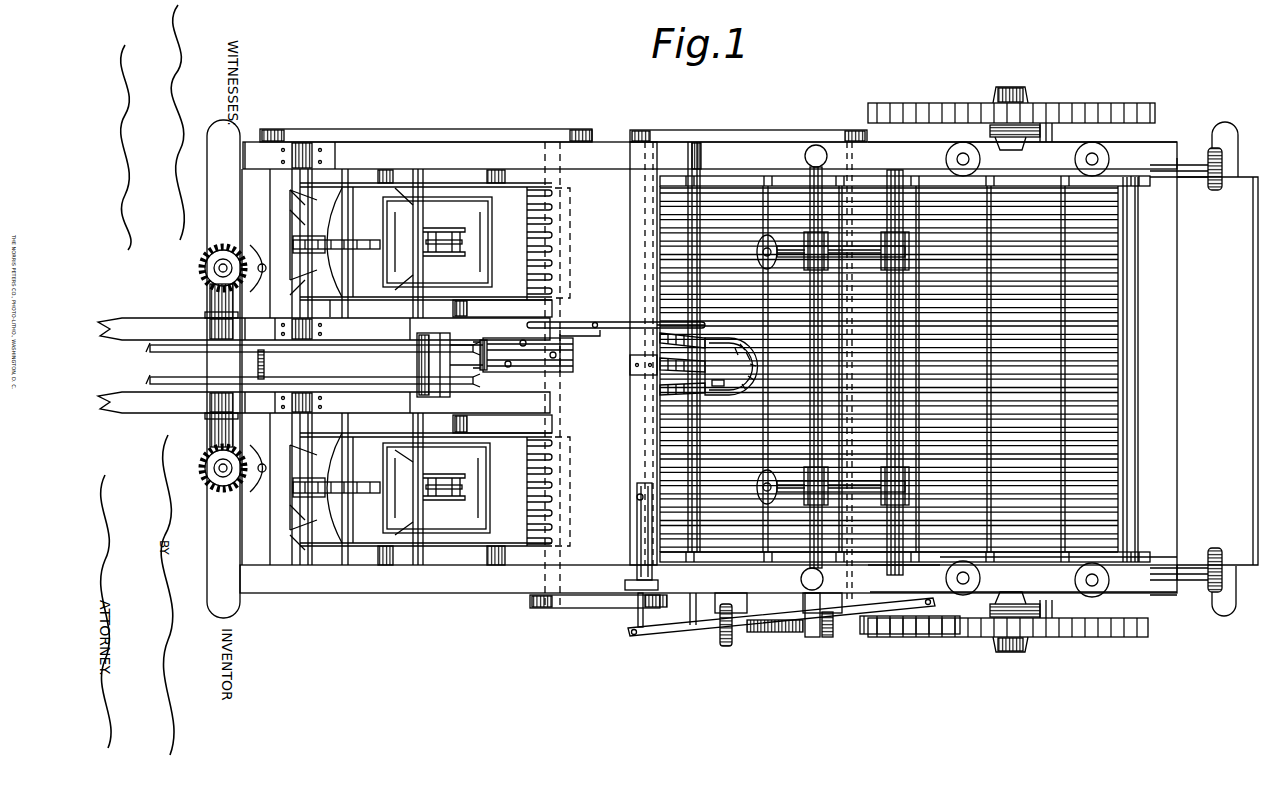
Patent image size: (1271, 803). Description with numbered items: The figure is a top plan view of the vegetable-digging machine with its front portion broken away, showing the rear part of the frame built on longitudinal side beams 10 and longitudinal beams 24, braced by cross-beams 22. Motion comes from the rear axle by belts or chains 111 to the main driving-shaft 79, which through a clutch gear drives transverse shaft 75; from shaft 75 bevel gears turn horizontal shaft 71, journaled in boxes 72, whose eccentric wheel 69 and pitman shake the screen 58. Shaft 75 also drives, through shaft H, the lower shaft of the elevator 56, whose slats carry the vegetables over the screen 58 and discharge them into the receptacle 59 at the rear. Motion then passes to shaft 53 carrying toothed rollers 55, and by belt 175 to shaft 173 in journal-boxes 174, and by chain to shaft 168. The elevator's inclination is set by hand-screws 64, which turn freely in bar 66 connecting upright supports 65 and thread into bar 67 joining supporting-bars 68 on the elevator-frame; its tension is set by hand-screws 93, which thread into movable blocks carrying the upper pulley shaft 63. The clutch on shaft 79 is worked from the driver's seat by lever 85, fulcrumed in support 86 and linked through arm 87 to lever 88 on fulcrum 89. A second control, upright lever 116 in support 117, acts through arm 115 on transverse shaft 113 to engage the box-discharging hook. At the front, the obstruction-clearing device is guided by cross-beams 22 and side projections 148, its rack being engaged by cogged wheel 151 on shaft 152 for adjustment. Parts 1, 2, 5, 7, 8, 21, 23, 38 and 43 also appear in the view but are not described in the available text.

The cylinder 1 is at (522, 342).
The frame box 2 is at (424, 462).
The bolt 5 is at (445, 496).
The cross bar 7 is at (443, 476).
The rod 8 is at (412, 516).
The side beams 10 is at (708, 375).
The post 21 is at (641, 353).
The cross-beams 22 is at (292, 367).
The gear wheel 23 is at (234, 369).
The longitudinal beams 24 is at (164, 413).
The plate 38 is at (421, 365).
The casing 43 is at (709, 364).
The shaft 53 is at (545, 158).
The toothed rollers 55 is at (568, 548).
The elevator 56 is at (765, 408).
The shaking screen 58 is at (746, 424).
The receptacle 59 is at (1217, 371).
The shaft 63 is at (645, 238).
The hand-screws 64 is at (790, 245).
The upright supports 65 is at (815, 145).
The bar 66 is at (810, 371).
The bar 67 is at (905, 353).
The supporting-bars 68 is at (915, 577).
The eccentric wheel 69 is at (715, 675).
The horizontal shaft 71 is at (770, 666).
The boxes 72 is at (745, 630).
The transverse shaft 75 is at (855, 150).
The shaft 79 is at (903, 158).
The lever 85 is at (637, 500).
The support 86 is at (637, 538).
The arm 87 is at (636, 618).
The lever 88 is at (690, 628).
The fulcrum 89 is at (885, 634).
The hand-screws 93 is at (1190, 600).
The belt or chain 111 is at (972, 130).
The transverse shaft 113 is at (725, 648).
The arm 115 is at (665, 312).
The upright lever 116 is at (596, 330).
The support 117 is at (602, 336).
The side projections 148 is at (330, 452).
The cogged wheel 151 is at (350, 482).
The shaft 152 is at (342, 512).
The shaft 168 is at (1009, 369).
The shaft 173 is at (315, 363).
The journal-boxes 174 is at (325, 158).
The belt 175 is at (426, 125).
The shaft H is at (765, 142).